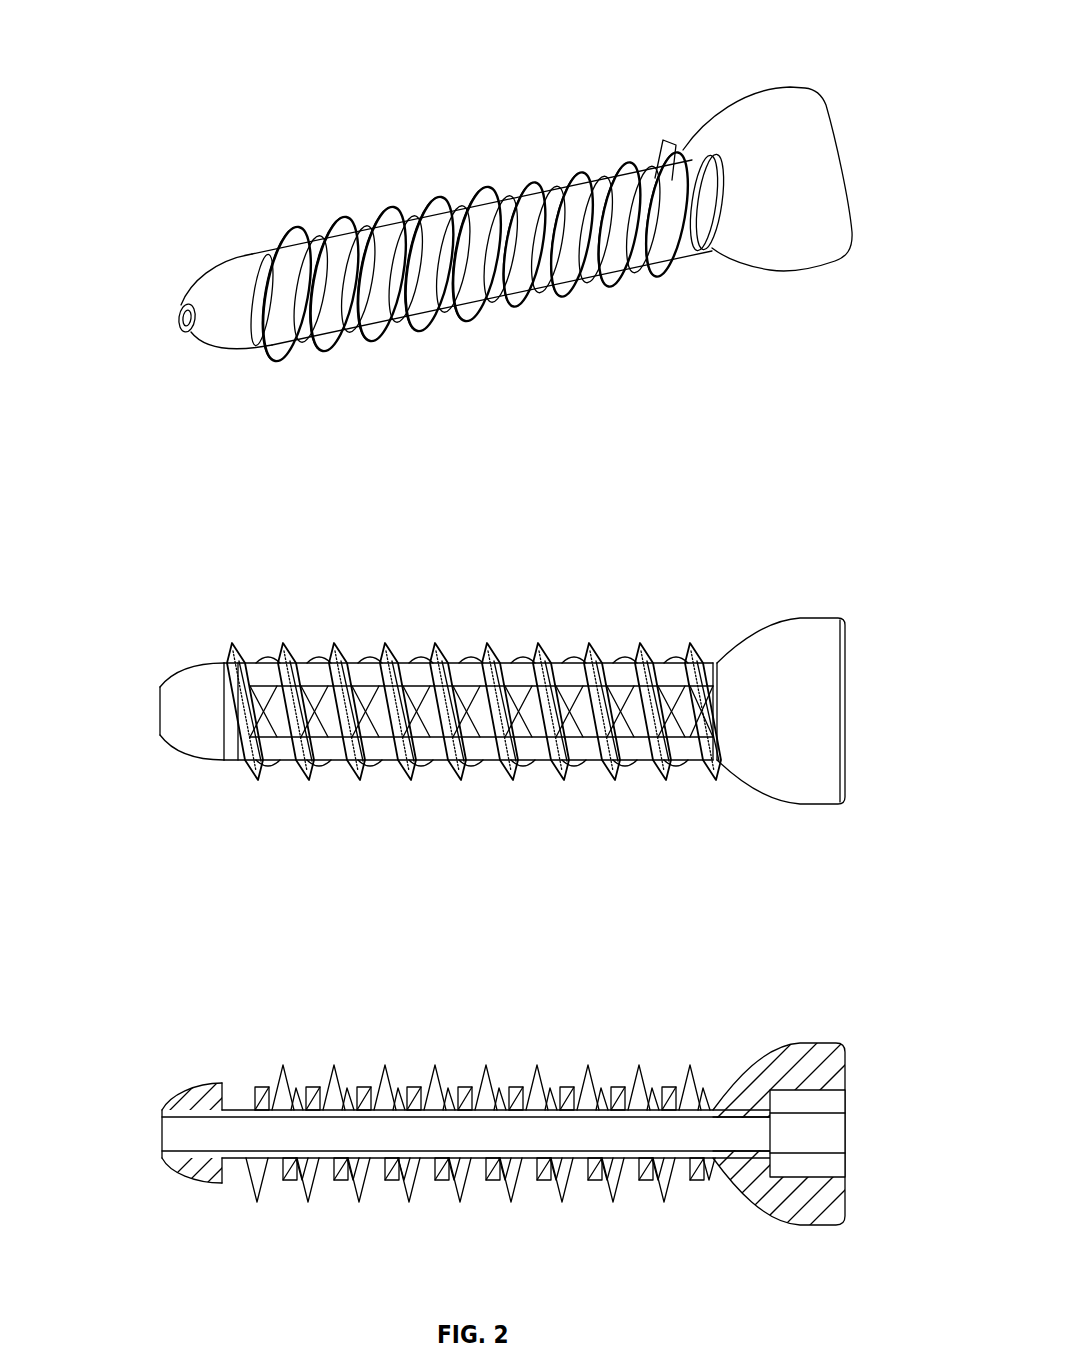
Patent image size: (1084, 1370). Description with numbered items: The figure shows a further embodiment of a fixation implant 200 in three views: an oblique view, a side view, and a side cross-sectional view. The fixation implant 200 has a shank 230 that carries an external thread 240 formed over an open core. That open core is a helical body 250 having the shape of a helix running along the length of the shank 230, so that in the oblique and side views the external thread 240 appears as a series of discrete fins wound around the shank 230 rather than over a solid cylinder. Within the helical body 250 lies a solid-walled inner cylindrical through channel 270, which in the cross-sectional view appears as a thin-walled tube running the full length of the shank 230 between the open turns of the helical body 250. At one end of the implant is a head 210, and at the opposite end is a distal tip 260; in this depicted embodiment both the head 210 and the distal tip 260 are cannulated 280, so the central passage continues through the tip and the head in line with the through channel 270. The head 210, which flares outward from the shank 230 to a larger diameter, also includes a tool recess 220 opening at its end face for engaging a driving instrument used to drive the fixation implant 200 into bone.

The fixation implant 200 is at (200, 85).
The head 210 is at (752, 93).
The tool recess 220 is at (832, 1104).
The shank 230 is at (598, 168).
The external thread 240 is at (332, 215).
The helical body 250 is at (365, 660).
The distal tip 260 is at (206, 272).
The inner cylindrical through channel 270 is at (553, 292).
The cannulation 280 is at (184, 322).